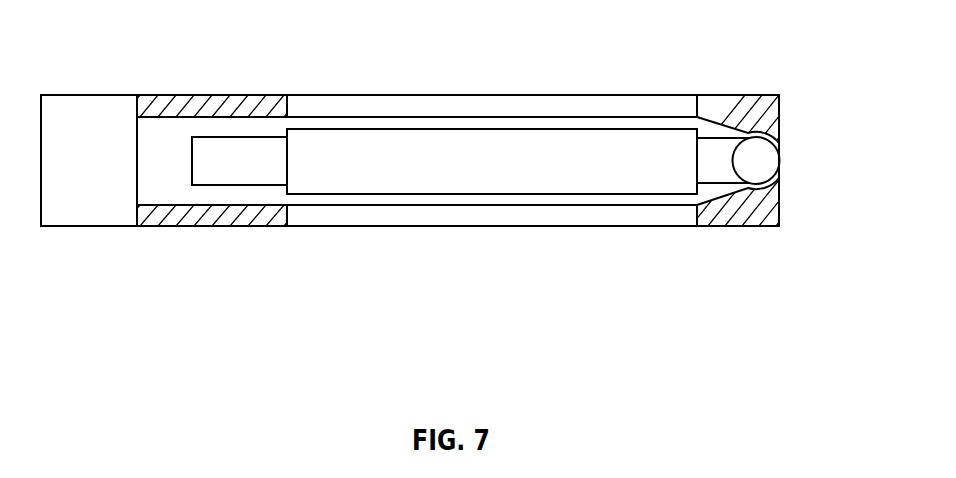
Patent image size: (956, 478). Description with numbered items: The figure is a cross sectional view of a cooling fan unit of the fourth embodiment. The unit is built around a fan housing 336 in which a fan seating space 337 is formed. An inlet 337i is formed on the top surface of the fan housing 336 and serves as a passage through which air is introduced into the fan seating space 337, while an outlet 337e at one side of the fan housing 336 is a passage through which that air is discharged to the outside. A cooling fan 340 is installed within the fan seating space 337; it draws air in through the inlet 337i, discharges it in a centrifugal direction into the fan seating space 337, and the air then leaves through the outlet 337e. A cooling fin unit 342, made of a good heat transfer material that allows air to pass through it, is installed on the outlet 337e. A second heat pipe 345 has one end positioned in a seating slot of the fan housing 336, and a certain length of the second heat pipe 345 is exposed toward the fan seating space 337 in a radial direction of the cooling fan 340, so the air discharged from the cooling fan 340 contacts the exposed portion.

The fan housing 336 is at (737, 110).
The fan seating space 337 is at (617, 123).
The outlet 337e is at (165, 135).
The inlet 337i is at (377, 112).
The cooling fan 340 is at (487, 165).
The cooling fin unit 342 is at (80, 125).
The second heat pipe 345 is at (250, 162).